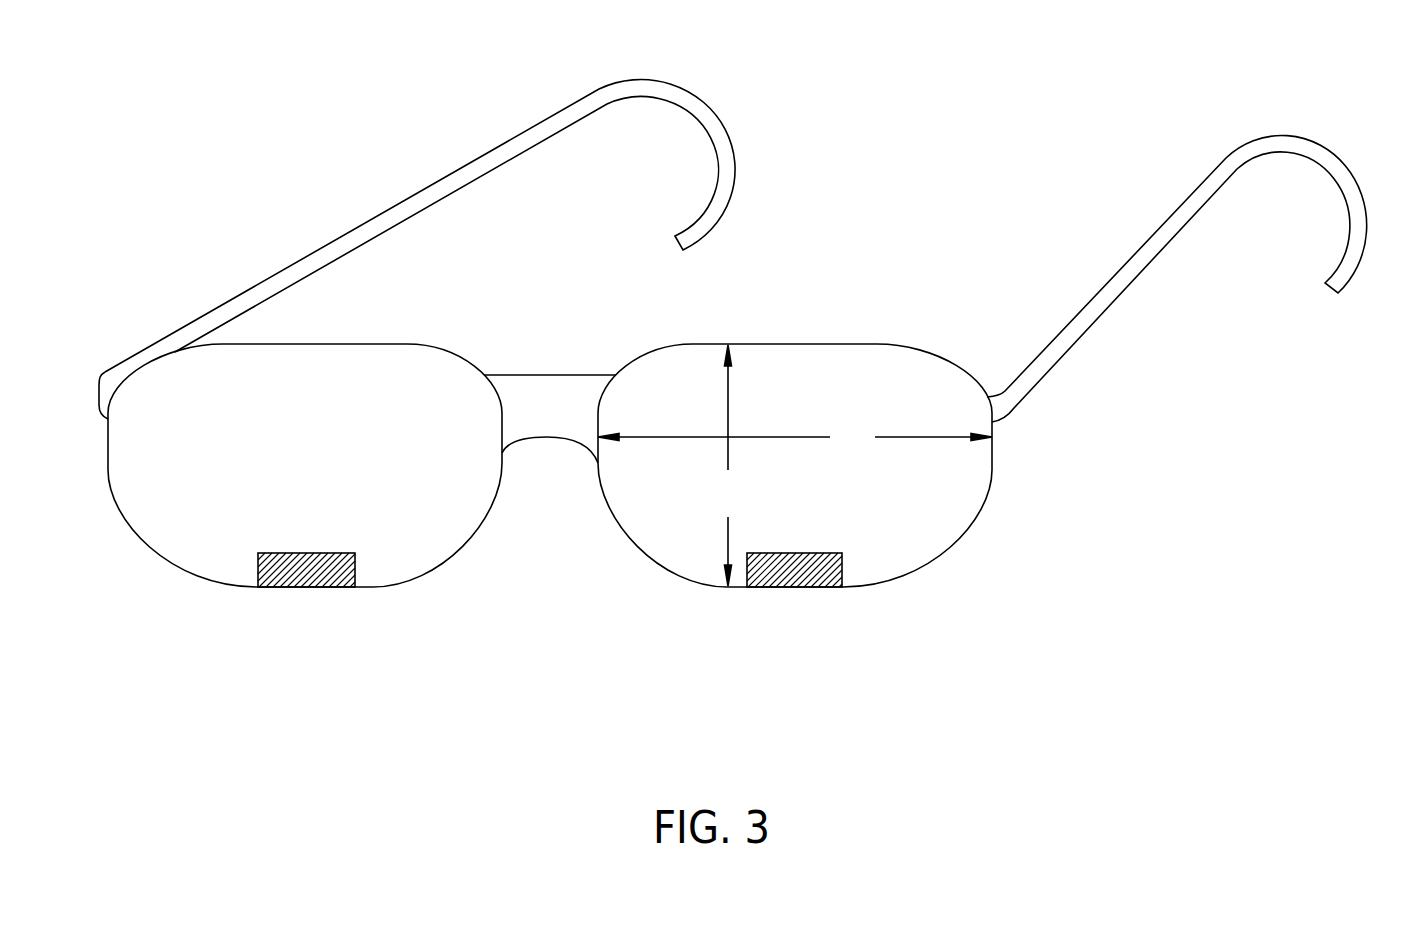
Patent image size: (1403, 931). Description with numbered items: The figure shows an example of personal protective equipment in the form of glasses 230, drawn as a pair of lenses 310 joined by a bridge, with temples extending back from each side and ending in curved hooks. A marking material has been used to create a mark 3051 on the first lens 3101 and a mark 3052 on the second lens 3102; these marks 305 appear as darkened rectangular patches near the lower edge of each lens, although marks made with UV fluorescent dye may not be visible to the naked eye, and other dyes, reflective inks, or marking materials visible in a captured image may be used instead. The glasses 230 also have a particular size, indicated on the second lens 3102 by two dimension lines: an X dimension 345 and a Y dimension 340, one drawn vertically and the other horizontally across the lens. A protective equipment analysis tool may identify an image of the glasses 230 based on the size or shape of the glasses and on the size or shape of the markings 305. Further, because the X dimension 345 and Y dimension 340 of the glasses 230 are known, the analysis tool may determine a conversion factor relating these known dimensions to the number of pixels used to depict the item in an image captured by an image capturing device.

The glasses 230 is at (950, 132).
The lenses 310 is at (550, 431).
The first lens 3101 is at (332, 345).
The second lens 3102 is at (833, 342).
The marks 305 is at (550, 622).
The first mark 3051 is at (305, 587).
The second mark 3052 is at (790, 587).
The Y dimension 340 is at (787, 437).
The X dimension 345 is at (728, 462).